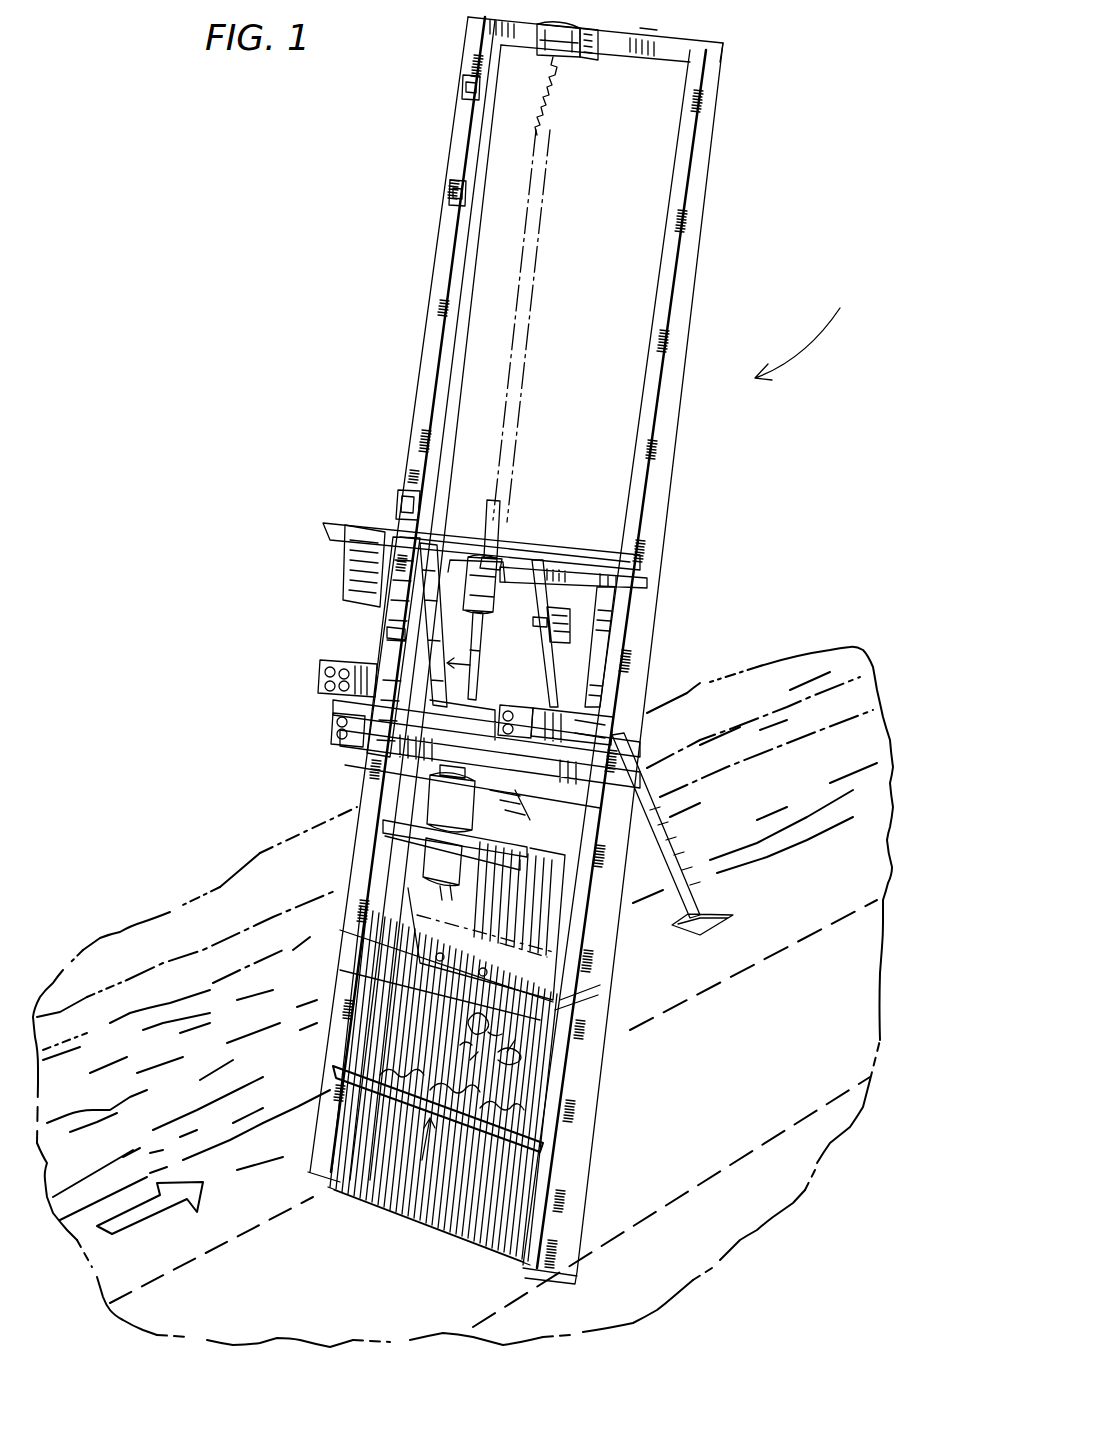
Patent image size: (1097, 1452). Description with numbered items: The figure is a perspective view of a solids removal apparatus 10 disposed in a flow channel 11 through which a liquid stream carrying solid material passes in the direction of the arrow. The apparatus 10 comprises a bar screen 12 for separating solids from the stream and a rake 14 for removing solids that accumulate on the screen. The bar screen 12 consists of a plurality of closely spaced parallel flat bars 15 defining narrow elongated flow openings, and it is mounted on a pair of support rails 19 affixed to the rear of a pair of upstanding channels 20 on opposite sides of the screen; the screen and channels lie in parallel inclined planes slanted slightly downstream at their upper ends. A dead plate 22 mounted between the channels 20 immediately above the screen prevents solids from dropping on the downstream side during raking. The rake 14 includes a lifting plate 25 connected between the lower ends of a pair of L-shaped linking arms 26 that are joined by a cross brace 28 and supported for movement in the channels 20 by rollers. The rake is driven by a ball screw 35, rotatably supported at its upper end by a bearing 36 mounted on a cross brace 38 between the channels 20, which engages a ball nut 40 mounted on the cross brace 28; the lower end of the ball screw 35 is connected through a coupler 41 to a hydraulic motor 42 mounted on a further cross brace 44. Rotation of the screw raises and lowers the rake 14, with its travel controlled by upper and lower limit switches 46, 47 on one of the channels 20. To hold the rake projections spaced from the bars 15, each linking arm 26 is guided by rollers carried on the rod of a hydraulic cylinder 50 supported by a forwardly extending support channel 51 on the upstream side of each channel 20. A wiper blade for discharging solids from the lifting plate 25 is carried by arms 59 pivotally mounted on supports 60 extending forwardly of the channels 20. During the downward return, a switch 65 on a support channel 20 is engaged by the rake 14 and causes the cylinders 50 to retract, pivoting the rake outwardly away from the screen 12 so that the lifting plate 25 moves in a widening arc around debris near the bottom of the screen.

The solids removal apparatus 10 is at (807, 328).
The flow channel 11 is at (768, 1069).
The bar screen 12 is at (643, 1103).
The rake 14 is at (400, 1089).
The flat bars 15 is at (335, 980).
The support rails 19 is at (600, 970).
The upstanding channels 20 is at (435, 310).
The dead plate 22 is at (481, 688).
The lifting plate 25 is at (340, 1085).
The linking arms 26 is at (340, 930).
The cross brace 28 is at (452, 542).
The ball screw 35 is at (502, 532).
The bearing 36 is at (572, 62).
The cross brace 38 is at (675, 52).
The ball nut 40 is at (515, 398).
The coupler 41 is at (415, 795).
The hydraulic motor 42 is at (410, 942).
The cross brace 44 is at (540, 818).
The upper movement limit switch 46 is at (462, 92).
The lower movement limit switch 47 is at (398, 502).
The hydraulic cylinder 50 is at (380, 657).
The support channel 51 is at (320, 665).
The arms 59 is at (557, 667).
The supports 60 is at (585, 572).
The switch 65 is at (450, 197).